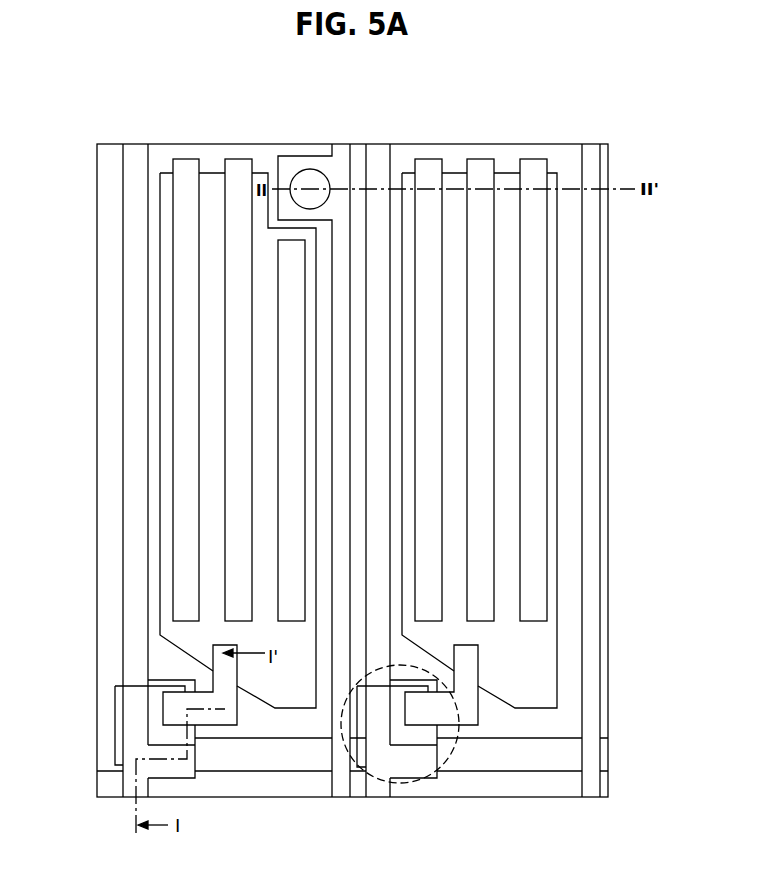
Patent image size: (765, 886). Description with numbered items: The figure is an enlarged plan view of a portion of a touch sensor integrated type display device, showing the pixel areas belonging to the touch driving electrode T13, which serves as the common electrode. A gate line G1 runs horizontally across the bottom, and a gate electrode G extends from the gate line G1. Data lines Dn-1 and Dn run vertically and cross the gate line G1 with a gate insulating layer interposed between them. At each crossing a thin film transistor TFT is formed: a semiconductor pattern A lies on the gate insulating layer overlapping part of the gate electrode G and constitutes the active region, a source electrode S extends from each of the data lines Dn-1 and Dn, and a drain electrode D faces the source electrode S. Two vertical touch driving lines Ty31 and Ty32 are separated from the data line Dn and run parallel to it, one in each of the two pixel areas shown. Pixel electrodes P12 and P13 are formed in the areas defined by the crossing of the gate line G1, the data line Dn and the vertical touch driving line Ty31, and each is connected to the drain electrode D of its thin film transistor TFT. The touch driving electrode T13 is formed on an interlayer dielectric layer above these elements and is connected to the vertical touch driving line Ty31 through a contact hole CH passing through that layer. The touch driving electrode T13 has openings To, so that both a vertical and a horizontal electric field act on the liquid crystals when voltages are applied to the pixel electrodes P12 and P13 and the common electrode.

The touch driving electrode T13 is at (315, 68).
The pixel electrode P12 is at (208, 172).
The pixel electrode P13 is at (453, 172).
The contact hole CH is at (309, 176).
The vertical touch driving line Ty31 is at (341, 155).
The vertical touch driving line Ty32 is at (590, 320).
The opening To is at (180, 430).
The data line Dn-1 is at (135, 552).
The data line Dn is at (376, 790).
The semiconductor pattern A is at (113, 724).
The thin film transistor TFT is at (400, 785).
The source electrode S is at (435, 755).
The drain electrode D is at (475, 710).
The gate electrode G is at (445, 736).
The gate line G1 is at (605, 755).